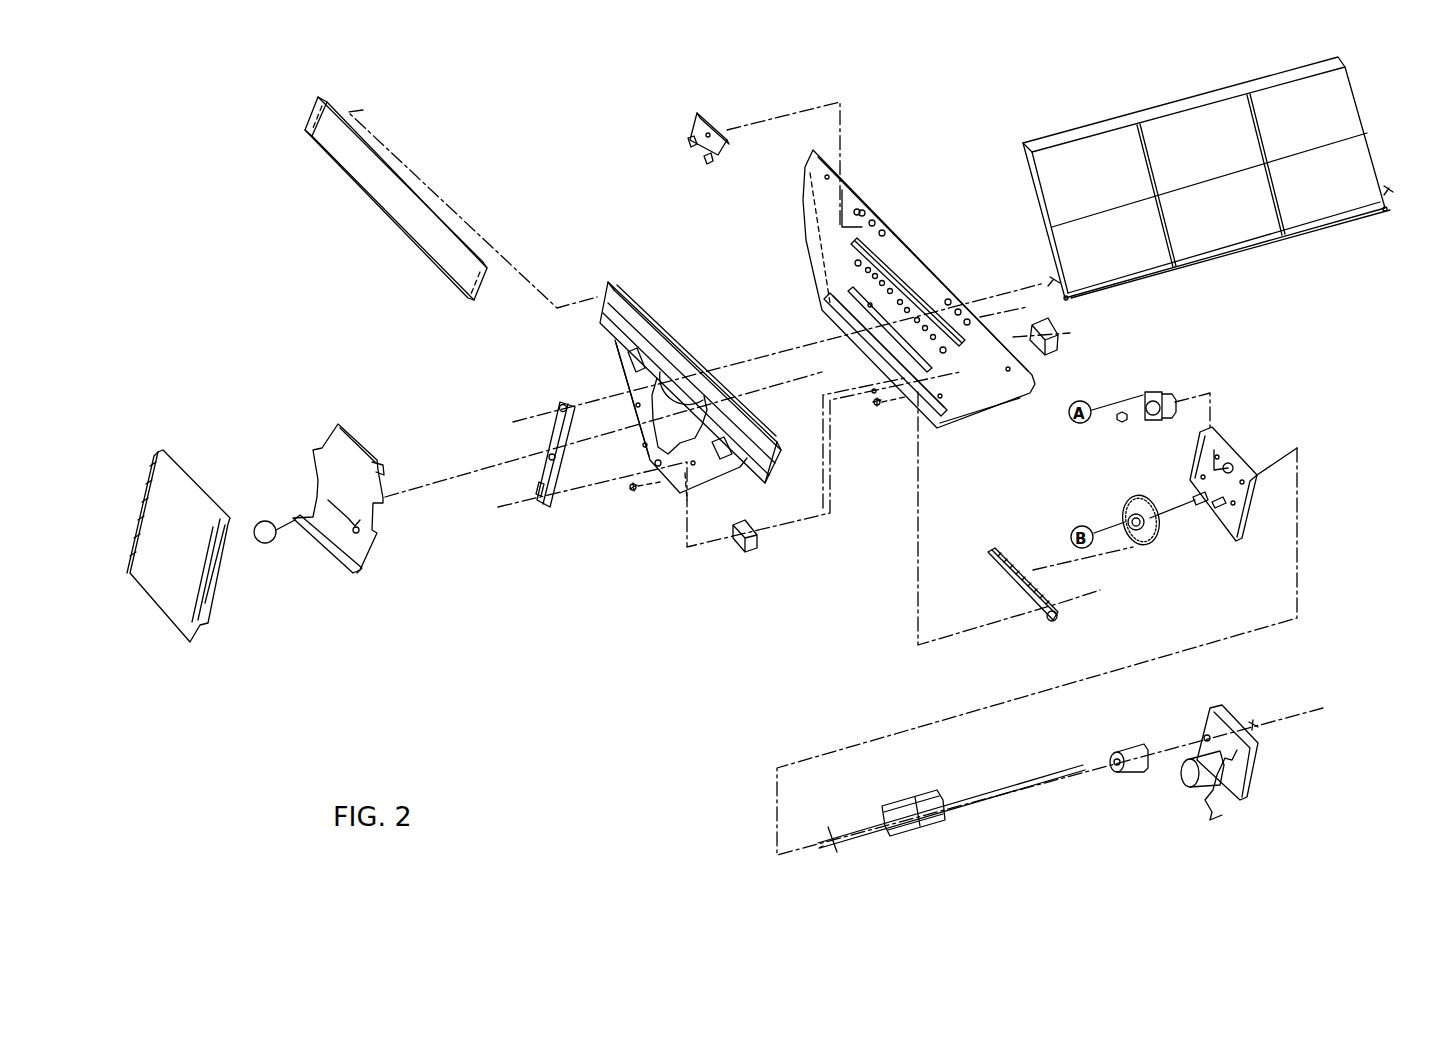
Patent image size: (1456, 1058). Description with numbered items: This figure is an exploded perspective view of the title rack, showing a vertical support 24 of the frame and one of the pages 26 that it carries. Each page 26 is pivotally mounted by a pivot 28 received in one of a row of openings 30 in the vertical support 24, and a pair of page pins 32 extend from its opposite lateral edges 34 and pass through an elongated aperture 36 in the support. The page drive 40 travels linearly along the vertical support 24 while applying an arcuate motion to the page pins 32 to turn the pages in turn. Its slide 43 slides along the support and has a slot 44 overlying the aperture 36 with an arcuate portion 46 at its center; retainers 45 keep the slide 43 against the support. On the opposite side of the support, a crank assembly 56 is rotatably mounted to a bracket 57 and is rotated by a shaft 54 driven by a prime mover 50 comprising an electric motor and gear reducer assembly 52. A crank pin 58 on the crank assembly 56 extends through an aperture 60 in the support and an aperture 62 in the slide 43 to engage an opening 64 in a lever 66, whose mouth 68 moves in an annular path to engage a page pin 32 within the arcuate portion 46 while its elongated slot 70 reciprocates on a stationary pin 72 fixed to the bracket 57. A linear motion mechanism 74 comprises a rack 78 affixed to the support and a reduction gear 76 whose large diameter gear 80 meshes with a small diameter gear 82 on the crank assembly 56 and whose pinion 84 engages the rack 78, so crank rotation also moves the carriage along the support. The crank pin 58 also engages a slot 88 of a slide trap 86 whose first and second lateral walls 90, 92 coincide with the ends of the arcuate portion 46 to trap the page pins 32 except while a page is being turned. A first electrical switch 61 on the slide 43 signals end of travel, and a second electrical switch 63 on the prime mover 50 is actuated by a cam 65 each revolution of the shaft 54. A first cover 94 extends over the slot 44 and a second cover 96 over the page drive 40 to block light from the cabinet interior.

The vertical support 24 is at (889, 306).
The page 26 is at (1210, 190).
The pivot 28 is at (1385, 212).
The opening 30 is at (902, 303).
The page pin 32 is at (1388, 190).
The lateral edge 34 is at (1368, 128).
The aperture 36 is at (880, 252).
The page drive 40 is at (706, 654).
The slide 43 is at (690, 358).
The slot 44 is at (647, 347).
The retainer 45 is at (699, 113).
The arcuate portion 46 is at (693, 370).
The prime mover 50 is at (1251, 741).
The gear reducer assembly 52 is at (1248, 797).
The shaft 54 is at (962, 797).
The crank assembly 56 is at (1148, 427).
The bracket 57 is at (1249, 484).
The crank pin 58 is at (1192, 378).
The aperture 60 is at (855, 290).
The first electrical switch 61 is at (760, 550).
The aperture 62 is at (690, 433).
The second electrical switch 63 is at (1243, 753).
The opening 64 is at (653, 438).
The cam 65 is at (1130, 742).
The lever 66 is at (524, 463).
The mouth 68 is at (572, 400).
The elongated slot 70 is at (540, 503).
The stationary pin 72 is at (1203, 500).
The linear motion mechanism 74 is at (1042, 596).
The reduction gear 76 is at (1159, 543).
The rack 78 is at (1050, 620).
The large diameter gear 80 is at (1147, 535).
The small diameter gear 82 is at (1173, 398).
The pinion 84 is at (1137, 530).
The slide trap 86 is at (333, 562).
The slot 88 is at (357, 530).
The first lateral wall 90 is at (382, 465).
The second lateral wall 92 is at (342, 502).
The first cover 94 is at (372, 197).
The second cover 96 is at (178, 467).